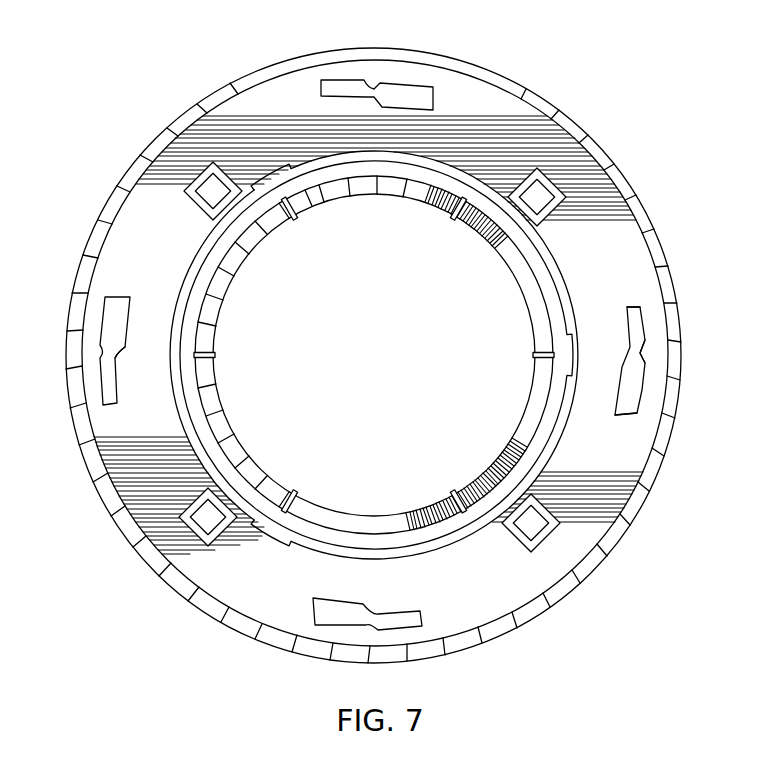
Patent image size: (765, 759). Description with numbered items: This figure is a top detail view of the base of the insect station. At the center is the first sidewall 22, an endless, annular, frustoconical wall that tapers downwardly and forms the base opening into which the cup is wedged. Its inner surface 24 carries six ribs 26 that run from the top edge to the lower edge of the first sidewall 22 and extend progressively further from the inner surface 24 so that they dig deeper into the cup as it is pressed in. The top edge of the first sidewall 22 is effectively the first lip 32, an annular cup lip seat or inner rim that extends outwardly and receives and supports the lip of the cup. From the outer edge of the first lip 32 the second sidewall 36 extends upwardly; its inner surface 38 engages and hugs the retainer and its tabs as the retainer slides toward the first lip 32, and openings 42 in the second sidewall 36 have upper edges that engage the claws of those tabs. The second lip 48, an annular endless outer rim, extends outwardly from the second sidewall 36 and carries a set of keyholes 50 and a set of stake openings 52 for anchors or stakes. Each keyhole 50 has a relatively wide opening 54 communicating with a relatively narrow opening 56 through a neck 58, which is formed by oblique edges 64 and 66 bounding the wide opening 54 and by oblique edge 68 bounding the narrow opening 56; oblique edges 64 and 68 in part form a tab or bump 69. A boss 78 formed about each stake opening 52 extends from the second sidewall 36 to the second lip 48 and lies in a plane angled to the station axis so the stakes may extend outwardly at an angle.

The first sidewall 22 is at (340, 198).
The inner surface 24 is at (513, 265).
The ribs 26 is at (217, 355).
The first lip 32 is at (215, 458).
The second sidewall 36 is at (232, 490).
The inner surface 38 is at (378, 551).
The openings 42 is at (268, 181).
The second lip 48 is at (470, 100).
The keyholes 50 is at (652, 393).
The stake openings 52 is at (520, 535).
The wide opening 54 is at (626, 413).
The narrow opening 56 is at (630, 306).
The neck 58 is at (380, 90).
The oblique edge 64 is at (104, 340).
The oblique edge 66 is at (118, 345).
The oblique edge 68 is at (382, 627).
The tab 69 is at (645, 356).
The boss 78 is at (213, 540).